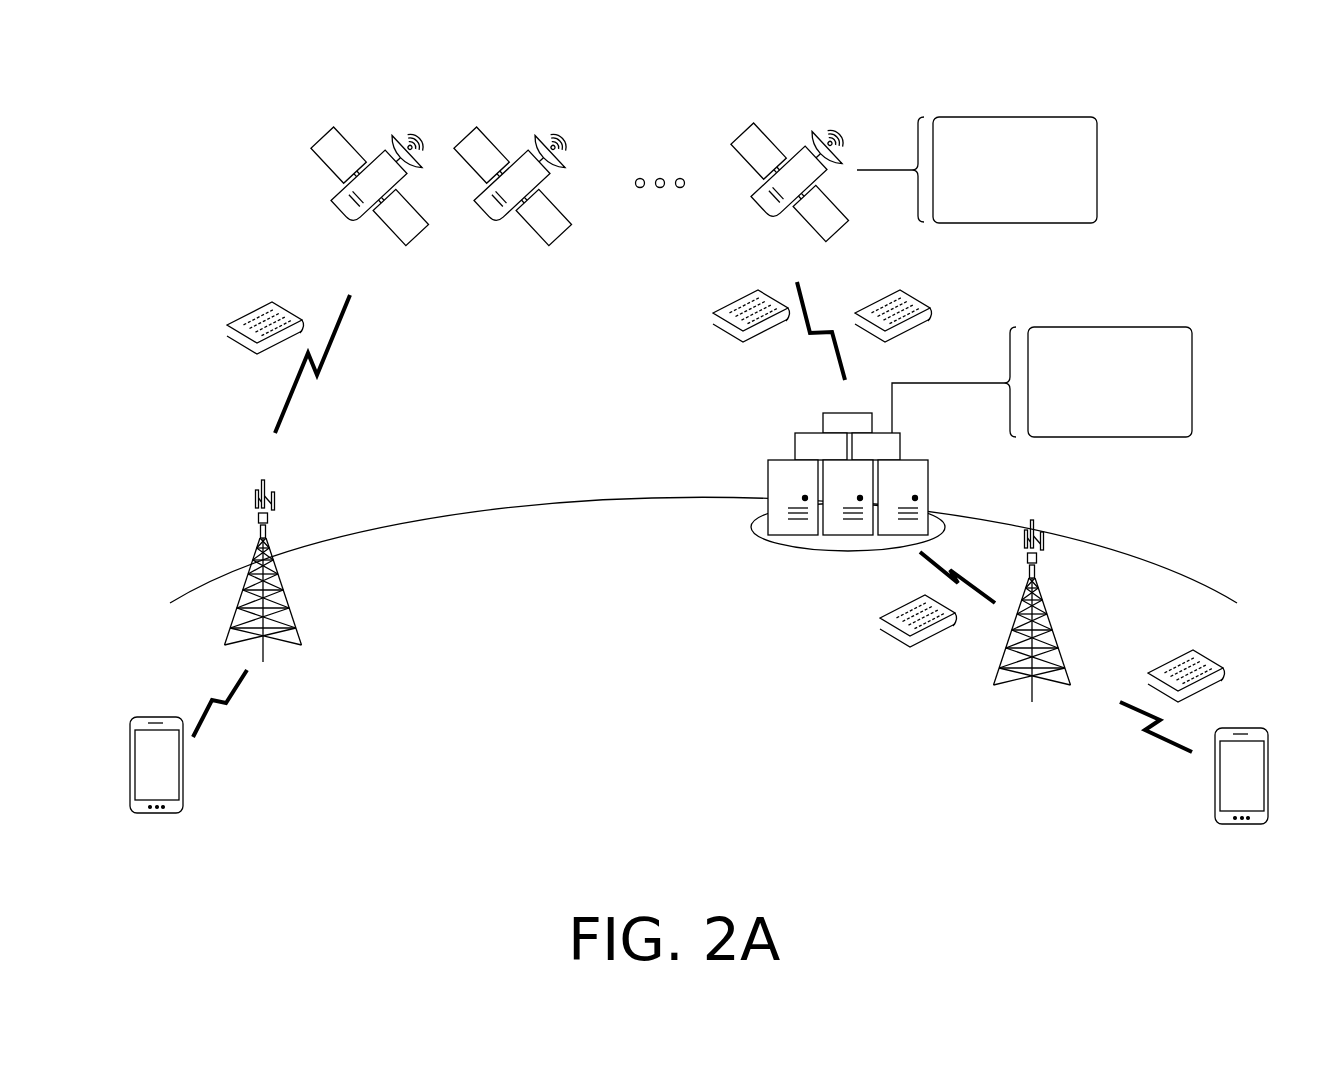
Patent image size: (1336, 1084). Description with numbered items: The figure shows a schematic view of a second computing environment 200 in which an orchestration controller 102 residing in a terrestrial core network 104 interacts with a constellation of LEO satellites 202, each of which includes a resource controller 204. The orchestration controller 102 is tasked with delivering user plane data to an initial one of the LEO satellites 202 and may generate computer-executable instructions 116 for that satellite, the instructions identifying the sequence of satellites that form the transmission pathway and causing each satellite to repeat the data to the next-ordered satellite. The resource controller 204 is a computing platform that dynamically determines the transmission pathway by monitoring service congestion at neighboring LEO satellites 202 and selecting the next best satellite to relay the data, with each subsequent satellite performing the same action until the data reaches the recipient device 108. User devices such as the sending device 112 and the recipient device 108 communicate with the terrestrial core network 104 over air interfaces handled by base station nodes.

The second computing environment 200 is at (1193, 100).
The LEO satellites 202 is at (745, 135).
The resource controller 204 is at (977, 170).
The orchestration controller 102 is at (1093, 417).
The terrestrial core network 104 is at (728, 622).
The computer-executable instructions 116 is at (735, 302).
The recipient device 108 is at (168, 815).
The sending device 112 is at (1238, 827).